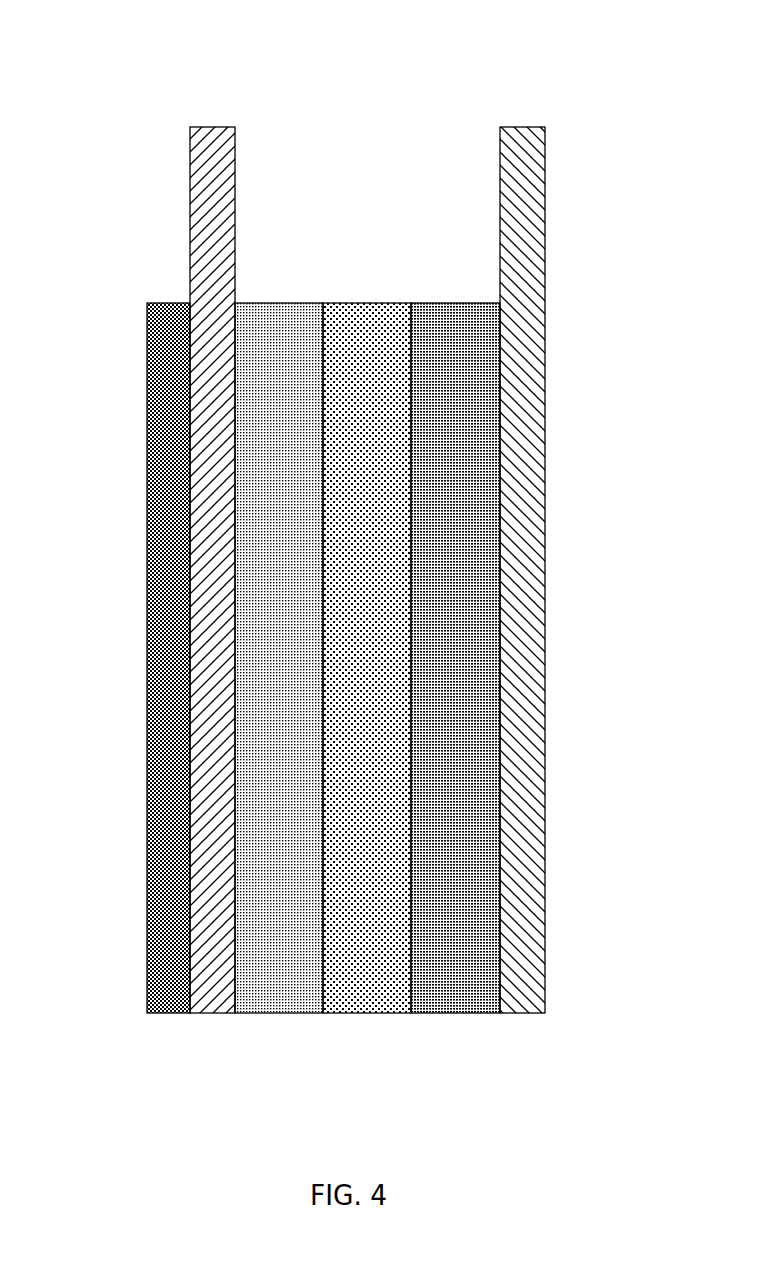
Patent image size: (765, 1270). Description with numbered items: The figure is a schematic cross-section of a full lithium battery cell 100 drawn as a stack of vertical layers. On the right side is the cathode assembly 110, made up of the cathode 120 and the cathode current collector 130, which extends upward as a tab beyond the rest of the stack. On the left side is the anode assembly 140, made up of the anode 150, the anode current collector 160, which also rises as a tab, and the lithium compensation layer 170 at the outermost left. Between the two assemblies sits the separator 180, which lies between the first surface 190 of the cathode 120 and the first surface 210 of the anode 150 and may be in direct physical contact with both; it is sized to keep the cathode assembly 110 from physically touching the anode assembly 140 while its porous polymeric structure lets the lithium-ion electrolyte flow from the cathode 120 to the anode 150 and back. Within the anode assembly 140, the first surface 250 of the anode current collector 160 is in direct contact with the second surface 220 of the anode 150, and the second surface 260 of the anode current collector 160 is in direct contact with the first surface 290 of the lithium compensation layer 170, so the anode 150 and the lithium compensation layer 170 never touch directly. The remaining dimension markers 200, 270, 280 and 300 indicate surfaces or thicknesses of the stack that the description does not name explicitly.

The lithium battery cell 100 is at (370, 102).
The cathode assembly 110 is at (543, 1057).
The cathode 120 is at (470, 345).
The cathode current collector 130 is at (527, 250).
The anode assembly 140 is at (320, 1057).
The anode 150 is at (285, 325).
The anode current collector 160 is at (210, 237).
The lithium compensation layer 170 is at (160, 375).
The separator 180 is at (375, 990).
The first surface of the cathode 190 is at (411, 418).
The cathode layer width 200 is at (500, 418).
The first surface of the anode 210 is at (323, 520).
The second surface of the anode 220 is at (235, 520).
The first surface of the anode current collector 250 is at (235, 163).
The second surface of the anode current collector 260 is at (190, 163).
The cathode current collector edge 270 is at (500, 180).
The cathode current collector thickness 280 is at (545, 180).
The first surface of the lithium compensation layer 290 is at (190, 760).
The protective layer thickness 300 is at (147, 760).